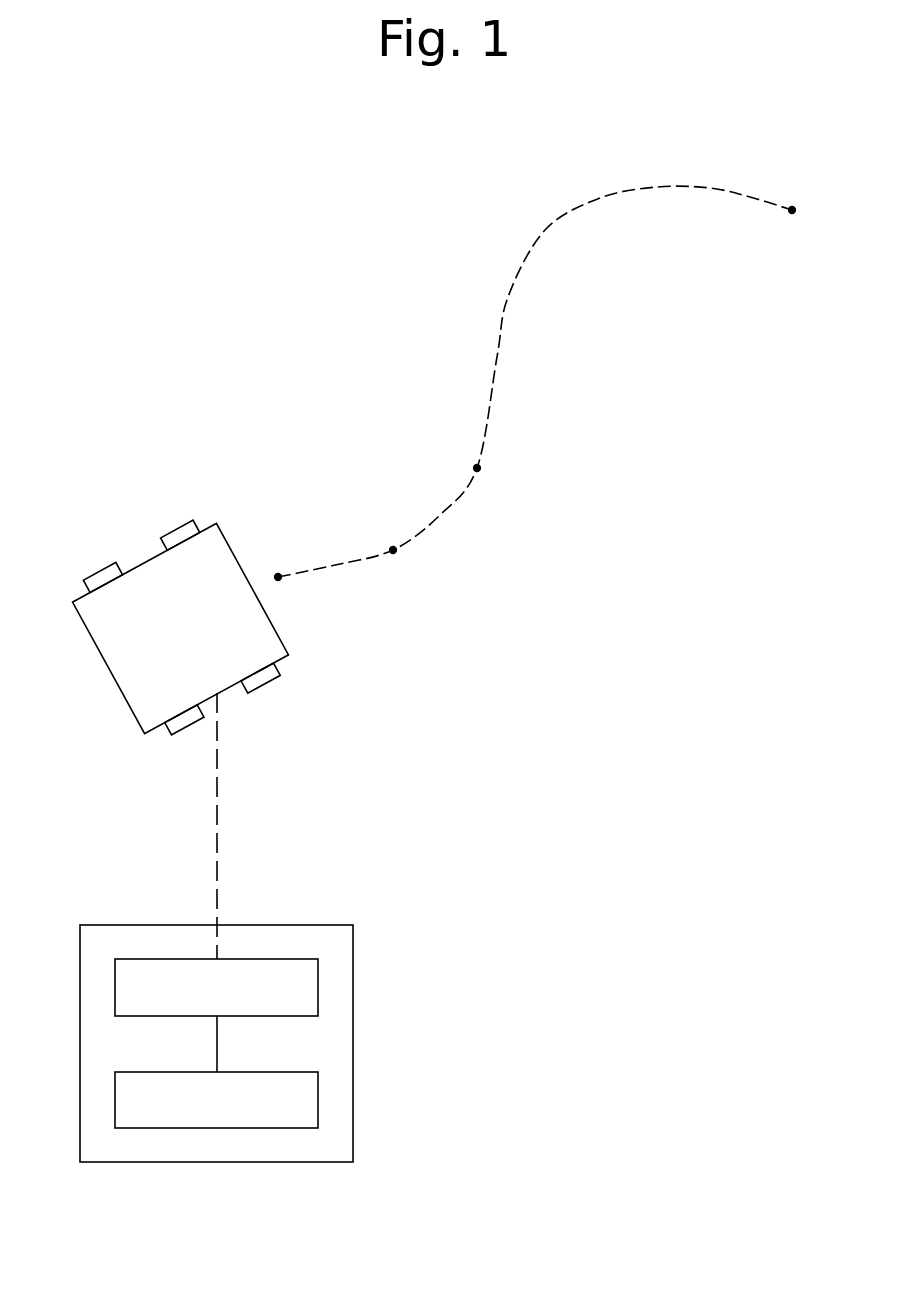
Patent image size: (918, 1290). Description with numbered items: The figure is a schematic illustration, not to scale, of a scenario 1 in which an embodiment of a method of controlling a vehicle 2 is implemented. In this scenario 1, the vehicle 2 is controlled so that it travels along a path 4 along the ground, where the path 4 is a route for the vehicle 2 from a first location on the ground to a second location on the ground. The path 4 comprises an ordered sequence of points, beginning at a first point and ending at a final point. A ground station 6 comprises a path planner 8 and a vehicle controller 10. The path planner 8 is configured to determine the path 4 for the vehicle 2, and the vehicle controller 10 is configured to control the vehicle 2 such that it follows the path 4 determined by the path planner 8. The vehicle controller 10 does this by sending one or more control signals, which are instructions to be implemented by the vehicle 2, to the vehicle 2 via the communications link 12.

The scenario 1 is at (298, 196).
The vehicle 2 is at (273, 628).
The path 4 is at (509, 301).
The ground station 6 is at (310, 925).
The path planner 8 is at (318, 1092).
The vehicle controller 10 is at (318, 985).
The communications link 12 is at (217, 830).